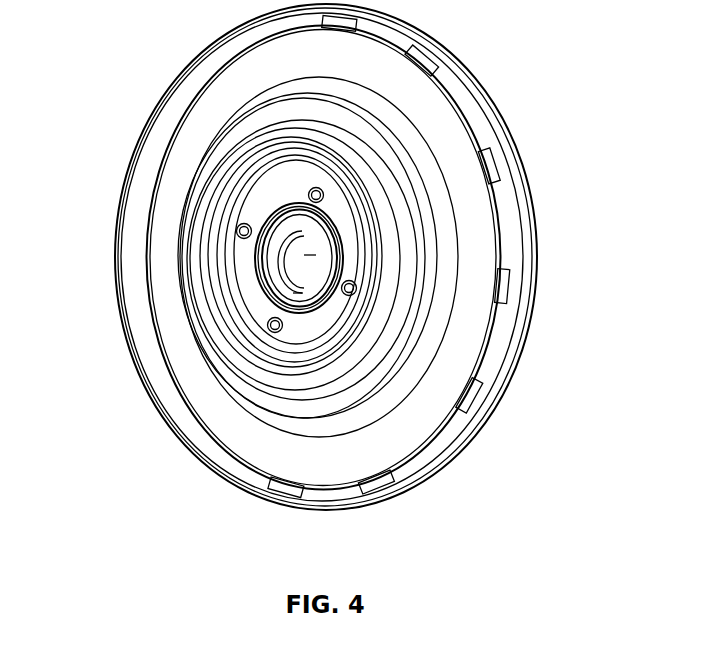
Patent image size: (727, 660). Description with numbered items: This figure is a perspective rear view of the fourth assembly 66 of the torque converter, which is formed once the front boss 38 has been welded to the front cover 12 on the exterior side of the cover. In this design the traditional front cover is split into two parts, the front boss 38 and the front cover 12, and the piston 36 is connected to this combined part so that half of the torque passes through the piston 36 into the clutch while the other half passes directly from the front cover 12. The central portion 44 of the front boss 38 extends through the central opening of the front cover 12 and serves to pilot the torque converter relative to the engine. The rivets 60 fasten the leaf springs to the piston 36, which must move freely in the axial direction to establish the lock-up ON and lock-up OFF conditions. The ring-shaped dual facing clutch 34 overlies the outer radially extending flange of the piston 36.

The front cover 12 is at (533, 218).
The dual facing clutch 34 is at (490, 162).
The piston 36 is at (430, 115).
The front boss 38 is at (282, 257).
The central portion 44 is at (262, 300).
The rivets 60 is at (310, 193).
The fourth assembly 66 is at (578, 185).